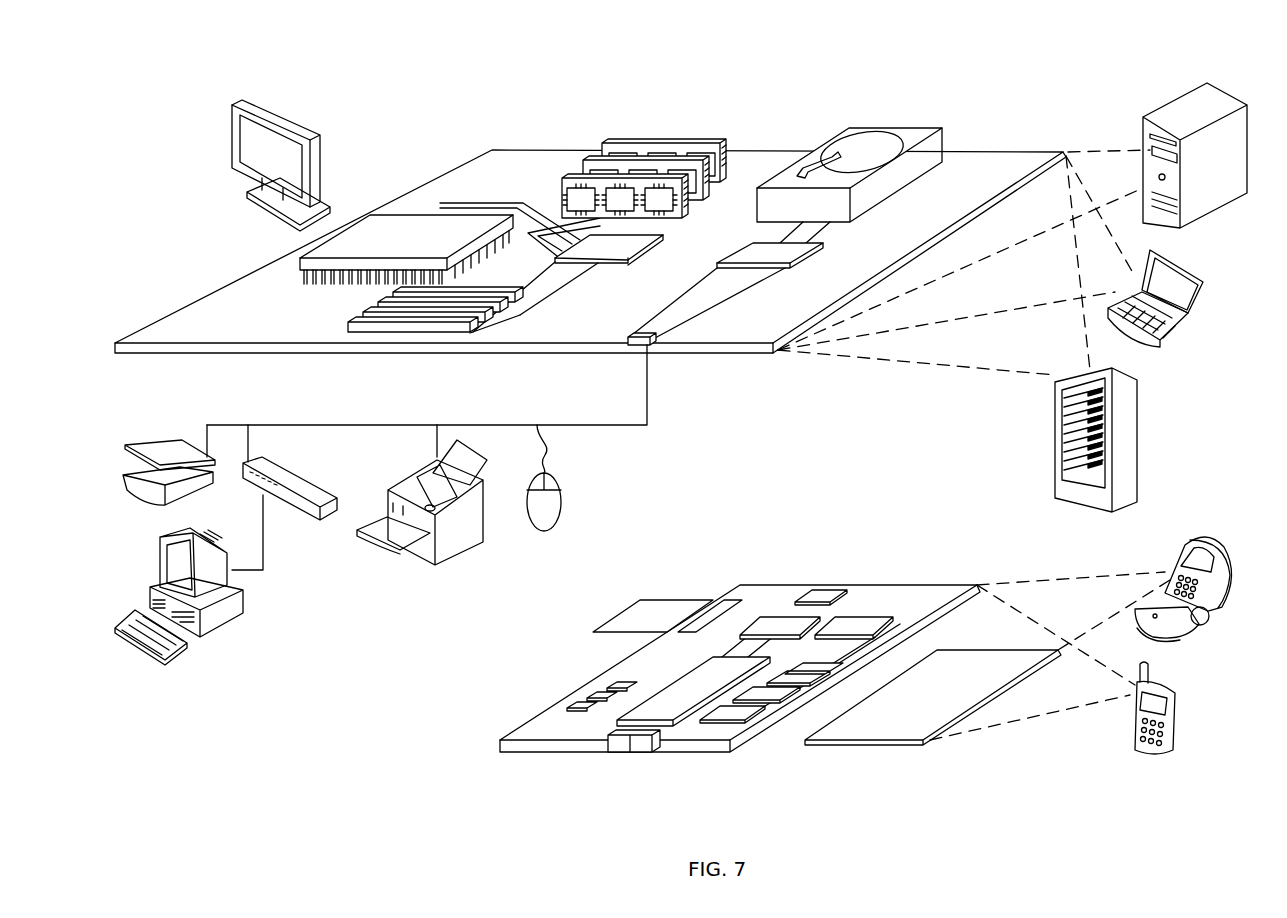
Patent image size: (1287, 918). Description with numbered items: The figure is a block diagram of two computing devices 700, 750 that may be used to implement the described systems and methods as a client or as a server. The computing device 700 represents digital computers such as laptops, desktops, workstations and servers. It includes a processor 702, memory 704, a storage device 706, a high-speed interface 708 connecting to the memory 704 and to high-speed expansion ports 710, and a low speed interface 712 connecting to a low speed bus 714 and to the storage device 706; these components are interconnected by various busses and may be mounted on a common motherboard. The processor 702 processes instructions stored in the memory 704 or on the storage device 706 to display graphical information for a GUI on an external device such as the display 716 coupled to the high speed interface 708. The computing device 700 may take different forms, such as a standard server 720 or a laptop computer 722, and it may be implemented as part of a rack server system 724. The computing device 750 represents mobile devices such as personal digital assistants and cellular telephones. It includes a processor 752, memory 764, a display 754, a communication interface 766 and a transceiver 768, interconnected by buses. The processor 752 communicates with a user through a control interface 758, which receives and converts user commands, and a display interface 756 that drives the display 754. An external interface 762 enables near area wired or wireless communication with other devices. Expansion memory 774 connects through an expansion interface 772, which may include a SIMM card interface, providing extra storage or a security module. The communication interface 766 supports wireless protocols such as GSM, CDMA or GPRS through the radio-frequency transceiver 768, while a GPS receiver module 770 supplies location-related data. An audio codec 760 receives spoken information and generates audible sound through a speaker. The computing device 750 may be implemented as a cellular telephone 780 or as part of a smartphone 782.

The computing device 700 is at (418, 112).
The processor 702 is at (300, 262).
The memory 704 is at (622, 146).
The storage device 706 is at (840, 140).
The high-speed interface 708 is at (575, 248).
The high-speed expansion ports 710 is at (368, 318).
The low speed interface 712 is at (752, 255).
The low speed bus 714 is at (640, 343).
The display 716 is at (240, 102).
The standard server 720 is at (1143, 135).
The laptop computer 722 is at (1200, 276).
The server 724 is at (1056, 466).
The computing device 750 is at (472, 752).
The processor 752 is at (667, 716).
The display 754 is at (895, 736).
The display interface 756 is at (736, 728).
The control interface 758 is at (793, 705).
The audio codec 760 is at (787, 688).
The external interface 762 is at (636, 748).
The memory 764 is at (590, 708).
The communication interface 766 is at (784, 626).
The transceiver 768 is at (854, 622).
The GPS receiver module 770 is at (828, 593).
The expansion interface 772 is at (712, 602).
The expansion memory 774 is at (638, 600).
The cellular telephone 780 is at (1186, 542).
The smartphone 782 is at (1134, 720).